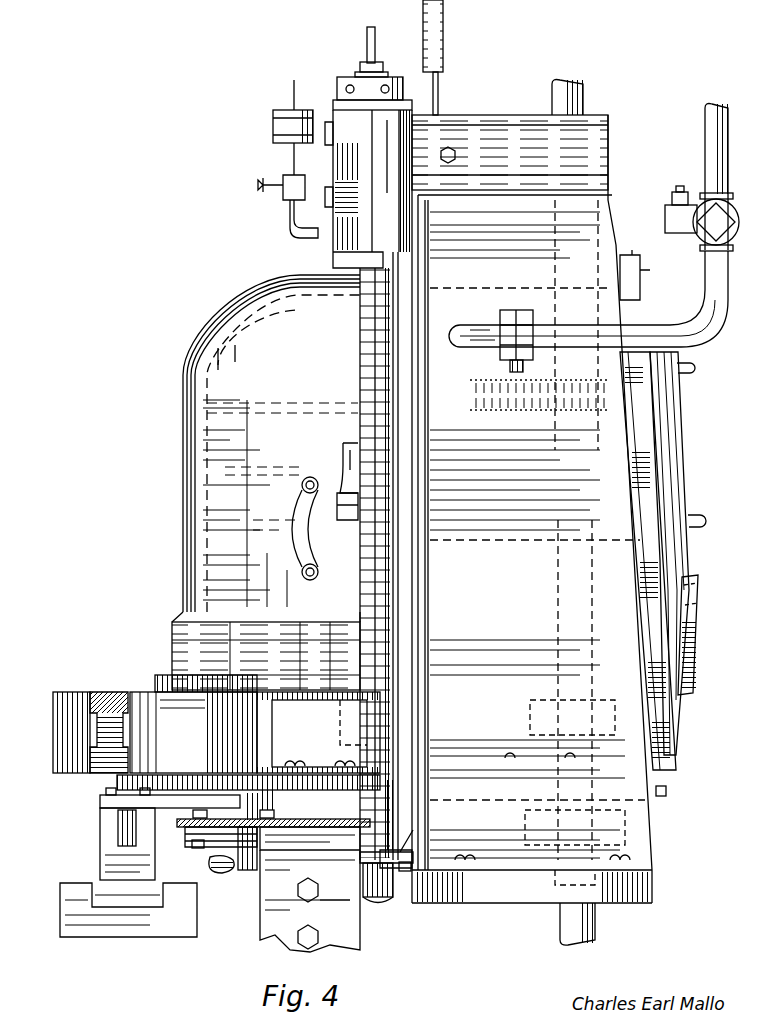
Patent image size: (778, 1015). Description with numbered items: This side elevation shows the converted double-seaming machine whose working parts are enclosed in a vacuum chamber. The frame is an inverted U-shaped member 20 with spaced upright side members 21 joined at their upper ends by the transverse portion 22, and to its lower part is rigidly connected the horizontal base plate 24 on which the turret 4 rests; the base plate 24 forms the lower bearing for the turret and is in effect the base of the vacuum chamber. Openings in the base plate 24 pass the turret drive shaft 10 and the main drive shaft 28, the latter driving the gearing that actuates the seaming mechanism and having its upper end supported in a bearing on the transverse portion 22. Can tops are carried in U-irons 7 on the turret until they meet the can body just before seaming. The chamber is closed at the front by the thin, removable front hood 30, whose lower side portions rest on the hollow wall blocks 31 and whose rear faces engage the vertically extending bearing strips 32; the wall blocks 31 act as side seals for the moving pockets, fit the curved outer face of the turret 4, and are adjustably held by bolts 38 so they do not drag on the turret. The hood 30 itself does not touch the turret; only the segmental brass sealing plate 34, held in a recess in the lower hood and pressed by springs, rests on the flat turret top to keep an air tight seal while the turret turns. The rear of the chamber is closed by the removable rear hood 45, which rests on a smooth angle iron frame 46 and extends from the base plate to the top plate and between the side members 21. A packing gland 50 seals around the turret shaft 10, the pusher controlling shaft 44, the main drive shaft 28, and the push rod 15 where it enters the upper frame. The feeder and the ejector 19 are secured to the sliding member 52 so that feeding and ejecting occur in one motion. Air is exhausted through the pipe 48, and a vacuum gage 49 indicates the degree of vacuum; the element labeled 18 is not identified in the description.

The turret 4 is at (72, 692).
The U-irons 7 is at (110, 695).
The turret drive shaft 10 is at (245, 865).
The push rod 15 is at (367, 40).
The actuating rod 18 is at (300, 826).
The ejector 19 is at (185, 805).
The inverted U-shaped member 20 is at (618, 193).
The upright side members 21 is at (537, 542).
The transverse portion 22 is at (510, 152).
The base plate 24 is at (415, 145).
The main drive shaft 28 is at (585, 95).
The front hood 30 is at (240, 364).
The wall blocks 31 is at (298, 690).
The bearing strips 32 is at (360, 333).
The sealing plate 34 is at (157, 684).
The bolts 38 is at (292, 765).
The controlling shaft 44 is at (380, 900).
The rear hood 45 is at (686, 470).
The angle iron frame 46 is at (655, 573).
The pipe 48 is at (720, 138).
The vacuum gage 49 is at (440, 34).
The packing gland 50 is at (188, 840).
The sliding member 52 is at (130, 890).